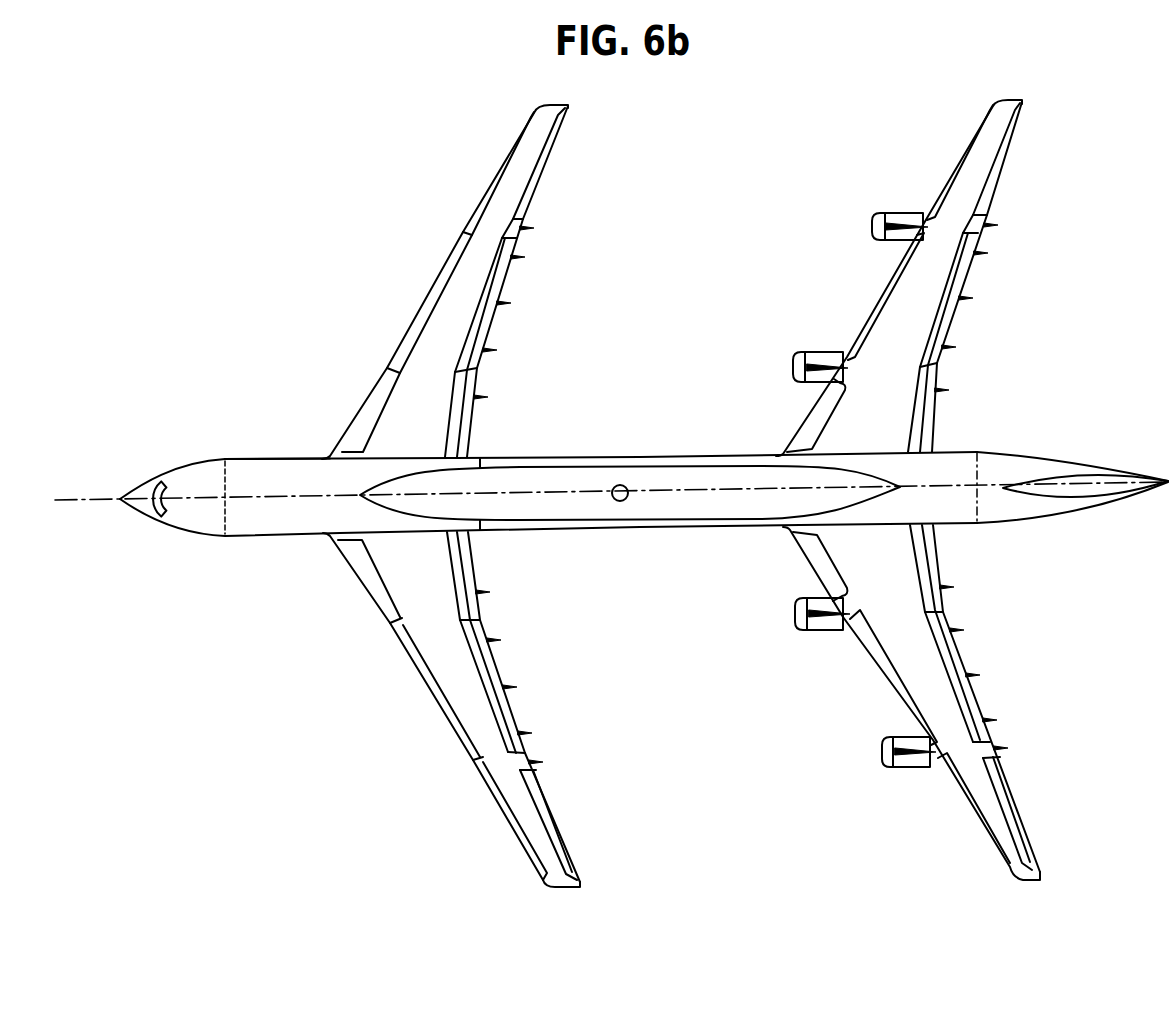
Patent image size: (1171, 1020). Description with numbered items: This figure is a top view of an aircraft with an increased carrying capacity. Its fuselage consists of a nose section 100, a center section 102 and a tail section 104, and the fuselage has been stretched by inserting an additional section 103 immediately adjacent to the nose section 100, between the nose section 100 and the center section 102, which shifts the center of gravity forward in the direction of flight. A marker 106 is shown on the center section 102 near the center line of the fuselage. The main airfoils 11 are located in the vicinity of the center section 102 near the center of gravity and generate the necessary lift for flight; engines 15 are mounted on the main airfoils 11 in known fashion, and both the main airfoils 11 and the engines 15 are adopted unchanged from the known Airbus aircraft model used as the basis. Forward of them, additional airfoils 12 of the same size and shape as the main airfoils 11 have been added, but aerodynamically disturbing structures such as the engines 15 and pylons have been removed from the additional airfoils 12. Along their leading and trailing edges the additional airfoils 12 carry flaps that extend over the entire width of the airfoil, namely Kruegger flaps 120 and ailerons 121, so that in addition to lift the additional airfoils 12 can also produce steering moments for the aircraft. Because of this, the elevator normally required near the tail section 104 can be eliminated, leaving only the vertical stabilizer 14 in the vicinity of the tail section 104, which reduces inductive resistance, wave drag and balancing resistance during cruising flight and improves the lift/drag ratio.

The nose section 100 is at (205, 472).
The additional section 103 is at (303, 472).
The center section 102 is at (610, 468).
The center of gravity marker 106 is at (710, 480).
The tail section 104 is at (1050, 463).
The vertical stabilizer 14 is at (1113, 477).
The main airfoils 11 is at (913, 285).
The additional airfoils 12 is at (468, 709).
The Kruegger flaps 120 is at (437, 700).
The ailerons 121 is at (490, 662).
The engines 15 is at (905, 768).